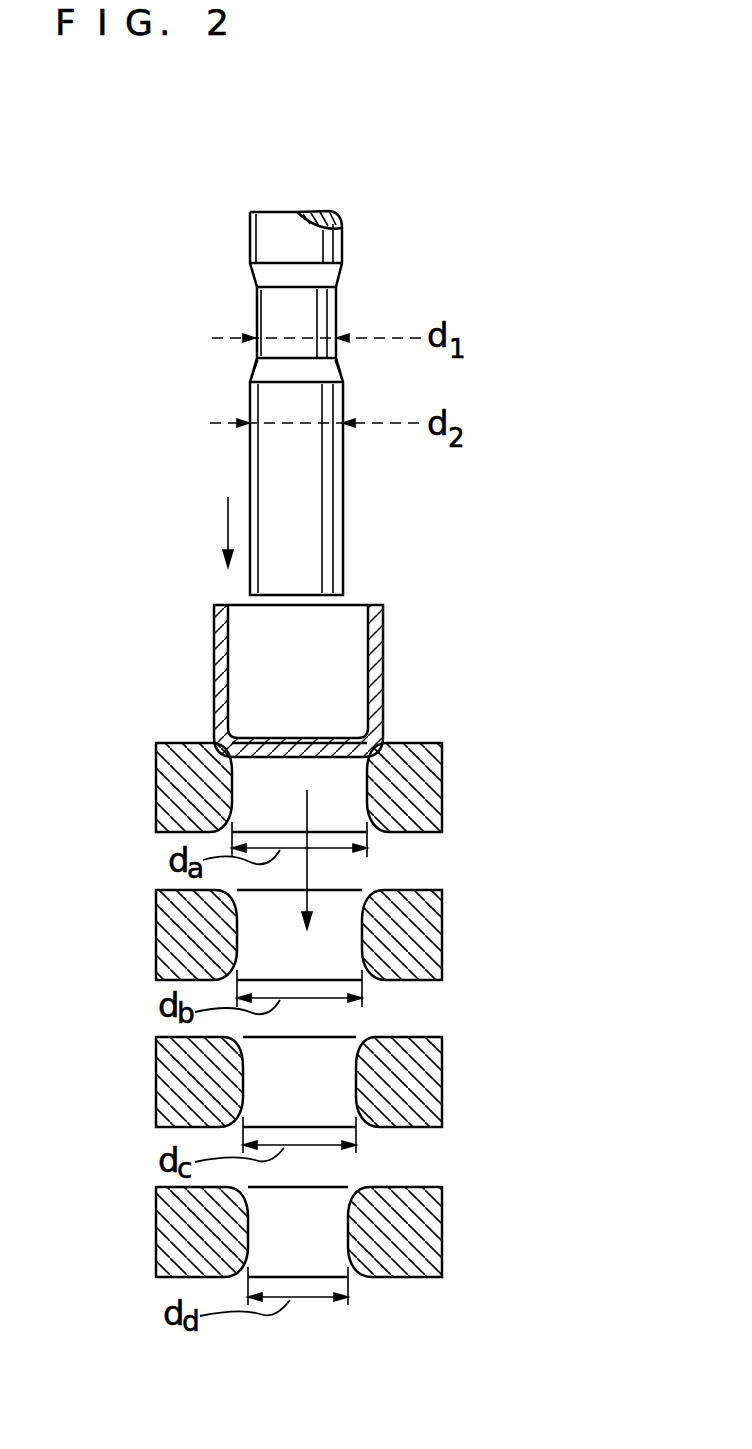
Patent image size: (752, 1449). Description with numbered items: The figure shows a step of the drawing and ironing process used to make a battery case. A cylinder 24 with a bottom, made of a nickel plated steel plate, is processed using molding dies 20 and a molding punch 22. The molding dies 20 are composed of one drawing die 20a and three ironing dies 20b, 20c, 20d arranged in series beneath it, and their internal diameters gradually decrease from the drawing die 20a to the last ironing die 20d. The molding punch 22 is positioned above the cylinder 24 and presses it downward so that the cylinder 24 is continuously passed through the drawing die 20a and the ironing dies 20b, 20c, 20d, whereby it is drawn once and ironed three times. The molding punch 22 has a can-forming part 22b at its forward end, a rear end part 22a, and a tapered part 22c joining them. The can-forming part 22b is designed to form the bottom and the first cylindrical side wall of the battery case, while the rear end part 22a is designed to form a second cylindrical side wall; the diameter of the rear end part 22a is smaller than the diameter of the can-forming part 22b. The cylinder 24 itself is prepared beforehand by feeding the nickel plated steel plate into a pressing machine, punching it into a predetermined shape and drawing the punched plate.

The molding dies 20 is at (527, 738).
The drawing die 20a is at (425, 797).
The ironing die 20b is at (418, 940).
The ironing die 20c is at (415, 1090).
The ironing die 20d is at (418, 1228).
The molding punch 22 is at (226, 303).
The rear end part 22a is at (303, 323).
The can-forming part 22b is at (343, 492).
The tapered part 22c is at (265, 371).
The cylinder 24 is at (383, 653).